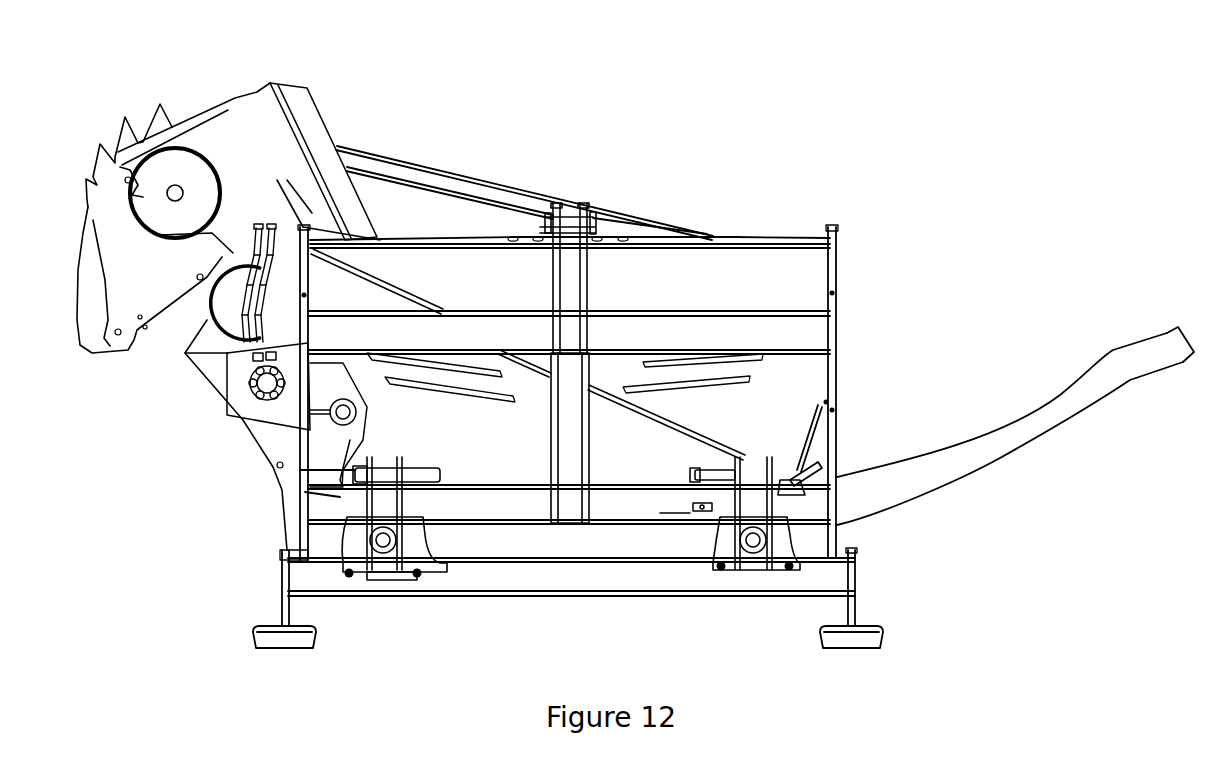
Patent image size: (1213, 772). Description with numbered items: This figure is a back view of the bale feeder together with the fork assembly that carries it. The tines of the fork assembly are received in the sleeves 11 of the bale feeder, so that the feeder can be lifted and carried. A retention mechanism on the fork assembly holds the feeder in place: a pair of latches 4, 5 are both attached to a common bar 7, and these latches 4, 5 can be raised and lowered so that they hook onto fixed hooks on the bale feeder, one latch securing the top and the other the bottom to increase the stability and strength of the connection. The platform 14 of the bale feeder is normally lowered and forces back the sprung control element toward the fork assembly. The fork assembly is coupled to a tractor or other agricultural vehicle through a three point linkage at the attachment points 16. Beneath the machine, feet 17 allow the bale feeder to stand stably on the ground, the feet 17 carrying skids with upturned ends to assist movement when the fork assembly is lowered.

The latch 4 is at (250, 97).
The attachment point 16 is at (568, 218).
The common bar 7 is at (690, 427).
The latch 5 is at (838, 407).
The foot 17 is at (273, 628).
The sleeve 11 is at (380, 553).
The platform 14 is at (697, 503).